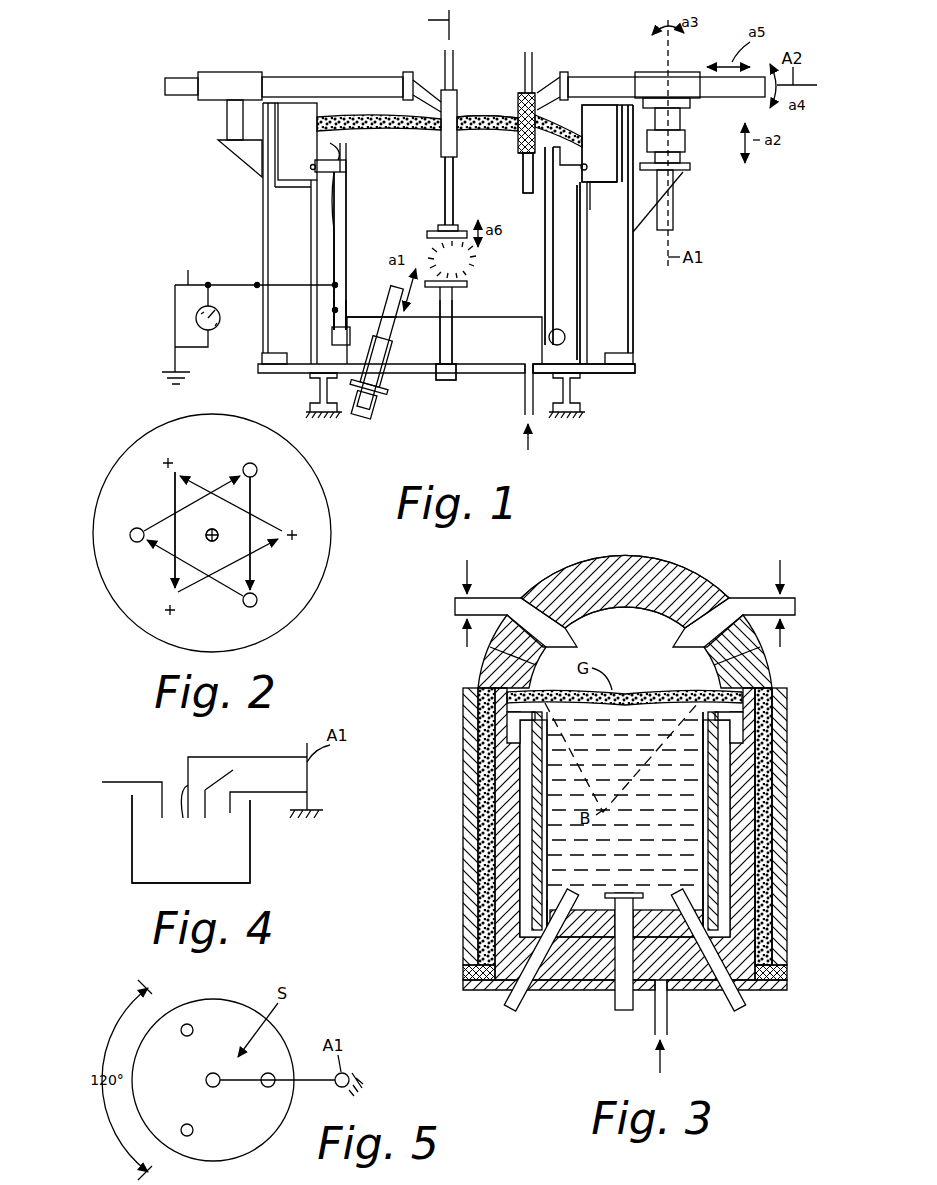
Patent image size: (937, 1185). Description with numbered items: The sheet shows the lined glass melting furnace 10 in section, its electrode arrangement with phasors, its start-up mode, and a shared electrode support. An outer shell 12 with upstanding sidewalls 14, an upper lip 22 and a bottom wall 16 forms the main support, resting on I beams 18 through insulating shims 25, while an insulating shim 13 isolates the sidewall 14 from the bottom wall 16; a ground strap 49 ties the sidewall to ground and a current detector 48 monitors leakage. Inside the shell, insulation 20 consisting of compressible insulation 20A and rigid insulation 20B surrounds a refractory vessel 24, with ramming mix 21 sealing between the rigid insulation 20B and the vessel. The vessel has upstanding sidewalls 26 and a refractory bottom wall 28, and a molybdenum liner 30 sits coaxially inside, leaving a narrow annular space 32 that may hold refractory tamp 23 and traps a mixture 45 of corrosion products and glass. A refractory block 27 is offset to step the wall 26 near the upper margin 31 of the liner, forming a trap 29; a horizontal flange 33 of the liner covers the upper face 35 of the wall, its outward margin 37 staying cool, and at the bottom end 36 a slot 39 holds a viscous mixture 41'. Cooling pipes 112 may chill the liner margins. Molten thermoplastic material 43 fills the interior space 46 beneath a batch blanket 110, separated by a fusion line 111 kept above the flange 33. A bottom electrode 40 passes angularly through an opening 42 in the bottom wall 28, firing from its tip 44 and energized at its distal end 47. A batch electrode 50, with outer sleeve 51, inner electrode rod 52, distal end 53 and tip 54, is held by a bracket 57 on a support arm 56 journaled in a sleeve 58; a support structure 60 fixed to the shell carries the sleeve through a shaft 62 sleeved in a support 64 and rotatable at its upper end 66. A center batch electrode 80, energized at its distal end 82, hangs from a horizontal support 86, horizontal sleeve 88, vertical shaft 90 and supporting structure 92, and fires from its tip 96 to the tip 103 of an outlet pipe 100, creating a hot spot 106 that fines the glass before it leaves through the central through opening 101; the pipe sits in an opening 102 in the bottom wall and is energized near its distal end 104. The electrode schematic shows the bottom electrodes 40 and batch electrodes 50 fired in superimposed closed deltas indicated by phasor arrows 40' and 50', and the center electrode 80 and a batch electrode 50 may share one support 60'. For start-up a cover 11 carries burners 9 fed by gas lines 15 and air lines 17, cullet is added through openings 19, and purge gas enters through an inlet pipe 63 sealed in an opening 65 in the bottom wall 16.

In FIG. 3, the burners 9 is at (667, 640).
In FIG. 1, the furnace 10 is at (586, 35).
In FIG. 2, the furnace 10 is at (212, 533).
In FIG. 4, the furnace 10 is at (250, 863).
In FIG. 5, the furnace 10 is at (197, 998).
In FIG. 3, the furnace 10 is at (652, 556).
In FIG. 3, the cover 11 is at (615, 555).
In FIG. 1, the outer shell 12 is at (633, 288).
In FIG. 1, the insulating shim 13 is at (262, 360).
In FIG. 3, the insulating shim 13 is at (463, 975).
In FIG. 1, the sidewalls 14 is at (633, 325).
In FIG. 3, the sidewalls 14 is at (465, 718).
In FIG. 3, the gas lines 15 is at (462, 575).
In FIG. 1, the bottom wall 16 is at (603, 373).
In FIG. 3, the bottom wall 16 is at (765, 990).
In FIG. 3, the air lines 17 is at (462, 638).
In FIG. 1, the I beams 18 is at (318, 395).
In FIG. 3, the openings 19 is at (488, 662).
In FIG. 3, the insulation layer 20 is at (480, 842).
In FIG. 1, the compressible insulation 20A is at (612, 343).
In FIG. 1, the rigid insulation 20B is at (635, 348).
In FIG. 1, the ramming mix 21 is at (580, 325).
In FIG. 3, the ramming mix 21 is at (773, 852).
In FIG. 1, the upper lip 22 is at (614, 110).
In FIG. 1, the refractory tamp 23 is at (552, 345).
In FIG. 1, the refractory vessel 24 is at (575, 272).
In FIG. 3, the refractory vessel 24 is at (745, 887).
In FIG. 1, the insulating shims 25 is at (307, 373).
In FIG. 1, the upstanding sidewalls 26 is at (578, 252).
In FIG. 1, the refractory block 27 is at (298, 110).
In FIG. 1, the refractory bottom wall 28 is at (482, 357).
In FIG. 3, the refractory bottom wall 28 is at (598, 962).
In FIG. 1, the trap 29 is at (340, 143).
In FIG. 3, the trap 29 is at (736, 730).
In FIG. 1, the liner 30 is at (545, 245).
In FIG. 3, the liner 30 is at (600, 778).
In FIG. 1, the upper margin 31 is at (348, 150).
In FIG. 3, the upper margin 31 is at (582, 742).
In FIG. 1, the annular space 32 is at (311, 302).
In FIG. 3, the annular space 32 is at (520, 813).
In FIG. 1, the horizontal flange 33 is at (346, 196).
In FIG. 3, the horizontal flange 33 is at (740, 743).
In FIG. 1, the upper face 35 is at (322, 205).
In FIG. 3, the upper face 35 is at (760, 767).
In FIG. 1, the bottom end 36 is at (337, 347).
In FIG. 1, the outward margin 37 is at (313, 165).
In FIG. 1, the slot 39 is at (347, 326).
In FIG. 3, the slot 39 is at (543, 910).
In FIG. 1, the bottom electrode 40 is at (386, 393).
In FIG. 2, the bottom electrode 40 is at (204, 533).
In FIG. 3, the bottom electrode 40 is at (624, 957).
In FIG. 2, the phasor arrows 40' is at (273, 533).
In FIG. 1, the mixture 41' is at (310, 319).
In FIG. 1, the opening 42 is at (390, 345).
In FIG. 1, the molten thermoplastic material 43 is at (405, 209).
In FIG. 3, the molten thermoplastic material 43 is at (613, 747).
In FIG. 1, the tip 44 is at (400, 313).
In FIG. 1, the mixture 45 is at (330, 275).
In FIG. 3, the mixture 45 is at (720, 858).
In FIG. 1, the interior space 46 is at (370, 253).
In FIG. 1, the distal end 47 is at (372, 421).
In FIG. 1, the current detector 48 is at (219, 312).
In FIG. 1, the ground strap 49 is at (250, 319).
In FIG. 1, the batch electrode 50 is at (512, 90).
In FIG. 2, the batch electrode 50 is at (241, 535).
In FIG. 4, the batch electrode 50 is at (204, 776).
In FIG. 5, the batch electrode 50 is at (258, 1080).
In FIG. 2, the phasor arrows 50' is at (223, 530).
In FIG. 1, the outer sleeve portion 51 is at (518, 110).
In FIG. 1, the electrode rod 52 is at (527, 145).
In FIG. 1, the distal end 53 is at (534, 52).
In FIG. 1, the tip 54 is at (524, 190).
In FIG. 1, the support arm 56 is at (586, 76).
In FIG. 1, the bracket 57 is at (599, 143).
In FIG. 1, the sleeve 58 is at (686, 74).
In FIG. 1, the support structure 60 is at (679, 201).
In FIG. 4, the support 60' is at (327, 780).
In FIG. 5, the support 60' is at (363, 1060).
In FIG. 1, the shaft 62 is at (686, 125).
In FIG. 1, the inlet pipe 63 is at (523, 407).
In FIG. 3, the inlet pipe 63 is at (668, 1027).
In FIG. 1, the support 64 is at (685, 142).
In FIG. 1, the opening 65 is at (524, 386).
In FIG. 3, the opening 65 is at (661, 990).
In FIG. 1, the upper end 66 is at (690, 104).
In FIG. 1, the center batch electrode 80 is at (452, 112).
In FIG. 2, the center batch electrode 80 is at (218, 537).
In FIG. 4, the center batch electrode 80 is at (191, 839).
In FIG. 5, the center batch electrode 80 is at (206, 1080).
In FIG. 1, the distal end 82 is at (444, 54).
In FIG. 1, the horizontal support 86 is at (318, 78).
In FIG. 1, the horizontal sleeve 88 is at (228, 78).
In FIG. 1, the vertical shaft 90 is at (227, 118).
In FIG. 1, the supporting structure 92 is at (247, 163).
In FIG. 1, the tip 96 is at (427, 234).
In FIG. 1, the outlet pipe 100 is at (453, 301).
In FIG. 2, the outlet pipe 100 is at (210, 530).
In FIG. 3, the outlet pipe 100 is at (624, 951).
In FIG. 1, the through opening 101 is at (442, 382).
In FIG. 1, the opening 102 is at (453, 330).
In FIG. 1, the tip 103 is at (467, 284).
In FIG. 1, the distal end 104 is at (452, 385).
In FIG. 1, the hot spot 106 is at (452, 259).
In FIG. 1, the batch blanket 110 is at (484, 130).
In FIG. 1, the fusion line 111 is at (449, 140).
In FIG. 1, the cooling pipes 112 is at (532, 340).